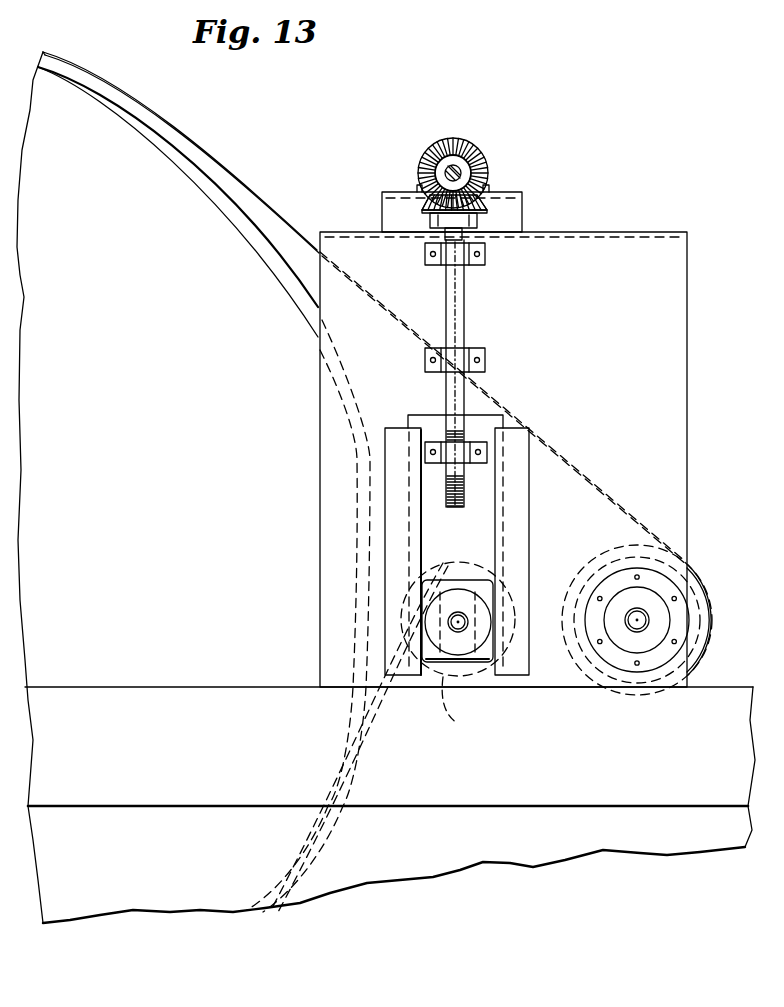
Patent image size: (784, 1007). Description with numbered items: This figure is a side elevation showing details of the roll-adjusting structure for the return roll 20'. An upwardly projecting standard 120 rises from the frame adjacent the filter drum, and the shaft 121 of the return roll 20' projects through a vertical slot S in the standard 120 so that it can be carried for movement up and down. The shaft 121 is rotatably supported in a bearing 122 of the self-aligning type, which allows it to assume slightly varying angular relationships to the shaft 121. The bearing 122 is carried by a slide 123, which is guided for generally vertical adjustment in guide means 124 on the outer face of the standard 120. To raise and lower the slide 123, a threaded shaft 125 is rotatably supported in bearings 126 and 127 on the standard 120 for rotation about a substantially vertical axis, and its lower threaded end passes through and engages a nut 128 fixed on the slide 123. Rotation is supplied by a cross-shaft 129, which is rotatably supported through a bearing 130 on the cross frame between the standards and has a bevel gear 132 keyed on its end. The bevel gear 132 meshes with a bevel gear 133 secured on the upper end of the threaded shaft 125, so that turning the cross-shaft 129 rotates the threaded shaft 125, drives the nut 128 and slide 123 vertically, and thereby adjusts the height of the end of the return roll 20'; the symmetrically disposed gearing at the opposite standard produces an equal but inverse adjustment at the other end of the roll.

The return roll 20' is at (462, 705).
The vertical slot S is at (463, 580).
The standard 120 is at (673, 312).
The shaft 121 is at (462, 627).
The bearing 122 is at (478, 608).
The slide 123 is at (486, 424).
The guide means 124 is at (397, 440).
The threaded shaft 125 is at (465, 303).
The bearing 126 is at (485, 247).
The bearing 127 is at (487, 352).
The nut 128 is at (487, 460).
The cross-shaft 129 is at (448, 166).
The bearing 130 is at (490, 188).
The bevel gear 132 is at (474, 146).
The bevel gear 133 is at (483, 212).